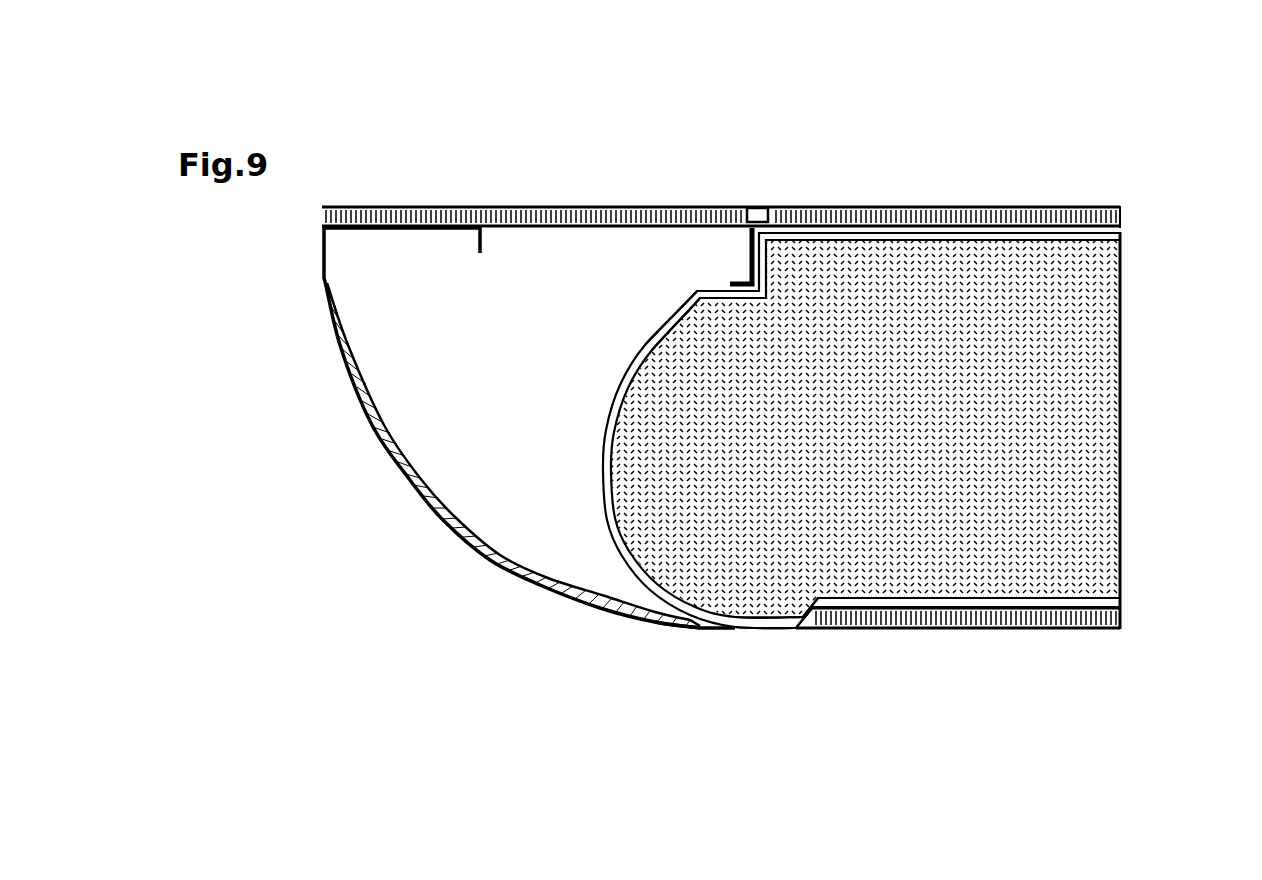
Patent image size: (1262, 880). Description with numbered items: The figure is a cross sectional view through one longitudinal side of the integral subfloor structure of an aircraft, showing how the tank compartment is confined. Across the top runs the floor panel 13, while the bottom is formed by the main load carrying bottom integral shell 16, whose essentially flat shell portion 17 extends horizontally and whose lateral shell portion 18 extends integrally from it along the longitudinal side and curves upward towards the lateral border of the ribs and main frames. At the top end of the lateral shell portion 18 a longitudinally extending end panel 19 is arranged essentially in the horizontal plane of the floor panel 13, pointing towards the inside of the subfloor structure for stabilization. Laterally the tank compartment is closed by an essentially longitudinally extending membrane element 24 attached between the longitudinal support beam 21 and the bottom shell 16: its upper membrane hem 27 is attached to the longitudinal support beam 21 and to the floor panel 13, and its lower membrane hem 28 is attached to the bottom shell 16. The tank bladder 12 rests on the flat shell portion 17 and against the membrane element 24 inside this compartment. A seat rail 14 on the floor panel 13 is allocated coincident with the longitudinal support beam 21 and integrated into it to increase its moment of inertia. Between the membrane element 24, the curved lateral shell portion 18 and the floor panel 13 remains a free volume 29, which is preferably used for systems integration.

The tank bladder 12 is at (1130, 390).
The floor panel 13 is at (1017, 198).
The seat rail 14 is at (762, 197).
The bottom integral shell 16 is at (669, 643).
The flat shell portion 17 is at (1022, 640).
The lateral shell portion 18 is at (385, 465).
The end panel 19 is at (384, 240).
The longitudinal support beam 21 is at (736, 258).
The membrane element 24 is at (689, 280).
The upper membrane hem 27 is at (740, 225).
The lower membrane hem 28 is at (773, 640).
The free volume 29 is at (521, 462).